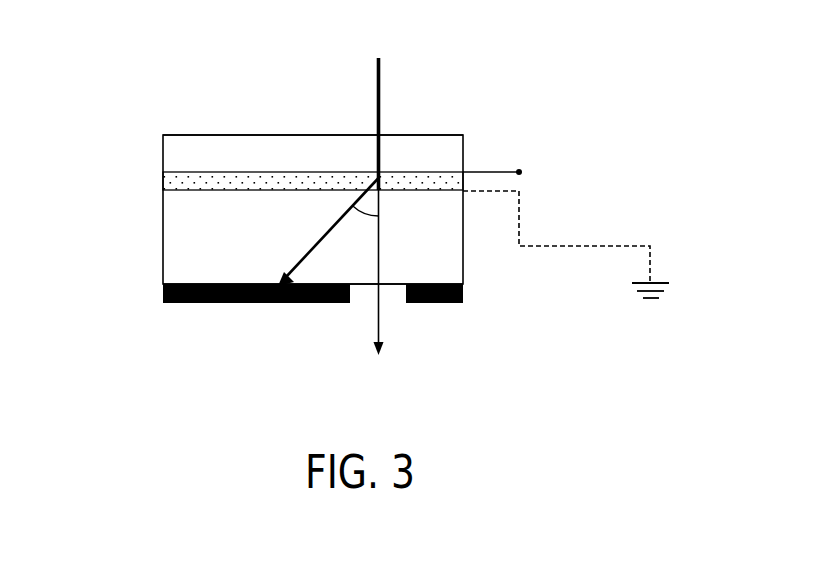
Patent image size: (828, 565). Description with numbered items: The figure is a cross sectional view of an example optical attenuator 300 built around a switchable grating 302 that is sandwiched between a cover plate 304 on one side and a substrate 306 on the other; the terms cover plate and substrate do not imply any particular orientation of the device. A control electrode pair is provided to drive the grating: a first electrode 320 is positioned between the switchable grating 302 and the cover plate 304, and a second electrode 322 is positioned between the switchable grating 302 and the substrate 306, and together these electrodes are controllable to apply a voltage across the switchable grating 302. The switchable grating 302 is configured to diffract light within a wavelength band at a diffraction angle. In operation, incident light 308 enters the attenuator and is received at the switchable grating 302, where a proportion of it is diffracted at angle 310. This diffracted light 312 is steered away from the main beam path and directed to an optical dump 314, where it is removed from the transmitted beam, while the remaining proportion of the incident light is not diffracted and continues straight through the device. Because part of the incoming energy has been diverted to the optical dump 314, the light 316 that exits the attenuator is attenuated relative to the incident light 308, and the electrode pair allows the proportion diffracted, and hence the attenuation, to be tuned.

The optical attenuator 300 is at (565, 14).
The switchable grating 302 is at (163, 182).
The cover plate 304 is at (217, 164).
The substrate 306 is at (217, 246).
The incident light 308 is at (377, 84).
The angle 310 is at (364, 216).
The diffracted light 312 is at (324, 238).
The optical dump 314 is at (163, 294).
The light 316 is at (379, 313).
The first electrode 320 is at (519, 172).
The second electrode 322 is at (519, 191).